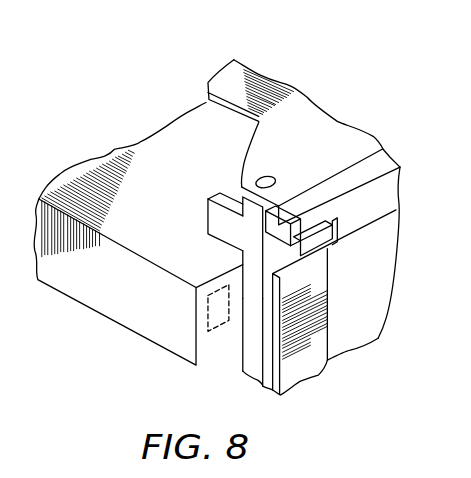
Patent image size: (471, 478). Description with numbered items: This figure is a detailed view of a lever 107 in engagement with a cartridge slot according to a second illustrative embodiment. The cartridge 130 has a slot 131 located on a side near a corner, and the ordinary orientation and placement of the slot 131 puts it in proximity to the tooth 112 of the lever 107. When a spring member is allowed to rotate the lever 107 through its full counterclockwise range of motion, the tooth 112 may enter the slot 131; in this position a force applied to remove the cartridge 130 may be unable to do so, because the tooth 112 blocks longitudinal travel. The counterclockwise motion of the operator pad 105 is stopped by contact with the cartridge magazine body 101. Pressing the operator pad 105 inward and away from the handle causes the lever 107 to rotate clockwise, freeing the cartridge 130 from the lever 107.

The cartridge magazine body 101 is at (332, 80).
The operator pad 105 is at (309, 244).
The lever 107 is at (262, 285).
The tooth 112 is at (205, 300).
The cartridge 130 is at (87, 277).
The slot 131 is at (236, 333).